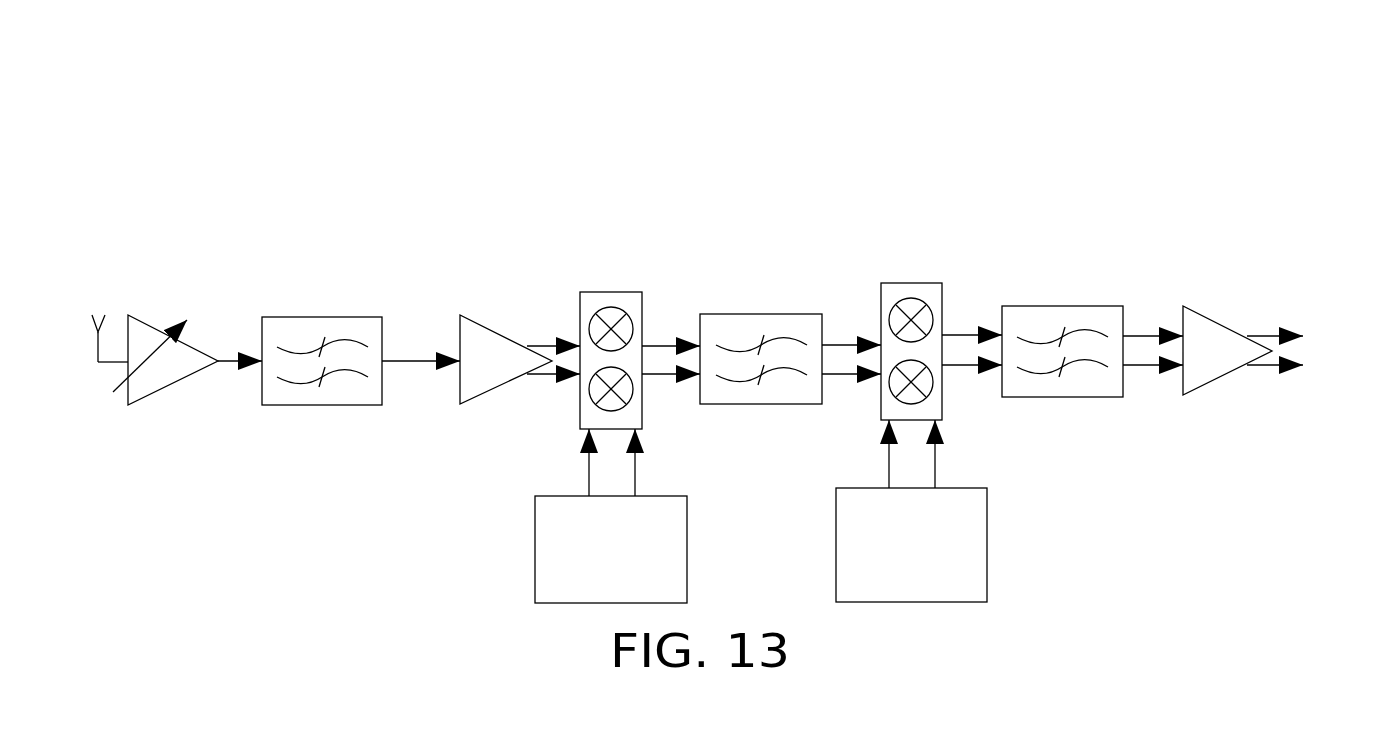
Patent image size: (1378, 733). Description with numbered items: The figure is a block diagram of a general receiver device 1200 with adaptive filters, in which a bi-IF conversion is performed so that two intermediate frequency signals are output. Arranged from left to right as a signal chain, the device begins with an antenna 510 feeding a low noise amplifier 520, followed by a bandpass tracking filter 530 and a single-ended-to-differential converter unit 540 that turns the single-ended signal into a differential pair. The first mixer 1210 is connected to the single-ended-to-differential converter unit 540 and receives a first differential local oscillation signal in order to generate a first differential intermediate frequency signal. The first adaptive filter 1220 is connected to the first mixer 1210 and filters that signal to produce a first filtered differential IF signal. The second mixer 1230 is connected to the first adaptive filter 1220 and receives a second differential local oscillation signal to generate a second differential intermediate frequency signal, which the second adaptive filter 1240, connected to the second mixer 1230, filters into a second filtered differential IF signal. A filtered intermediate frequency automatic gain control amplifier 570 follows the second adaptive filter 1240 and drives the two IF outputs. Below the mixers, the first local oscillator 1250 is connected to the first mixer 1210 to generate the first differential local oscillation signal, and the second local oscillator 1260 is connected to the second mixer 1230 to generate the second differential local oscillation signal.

The general receiver device 1200 is at (278, 162).
The antenna 510 is at (98, 328).
The low noise amplifier 520 is at (187, 320).
The bandpass tracking filter 530 is at (324, 317).
The single-ended-to-differential converter unit 540 is at (495, 327).
The first mixer 1210 is at (610, 292).
The first adaptive filter 1220 is at (758, 313).
The second mixer 1230 is at (910, 283).
The second adaptive filter 1240 is at (1059, 306).
The filtered intermediate frequency automatic gain control amplifier 570 is at (1217, 318).
The first local oscillator 1250 is at (535, 548).
The second local oscillator 1260 is at (836, 546).